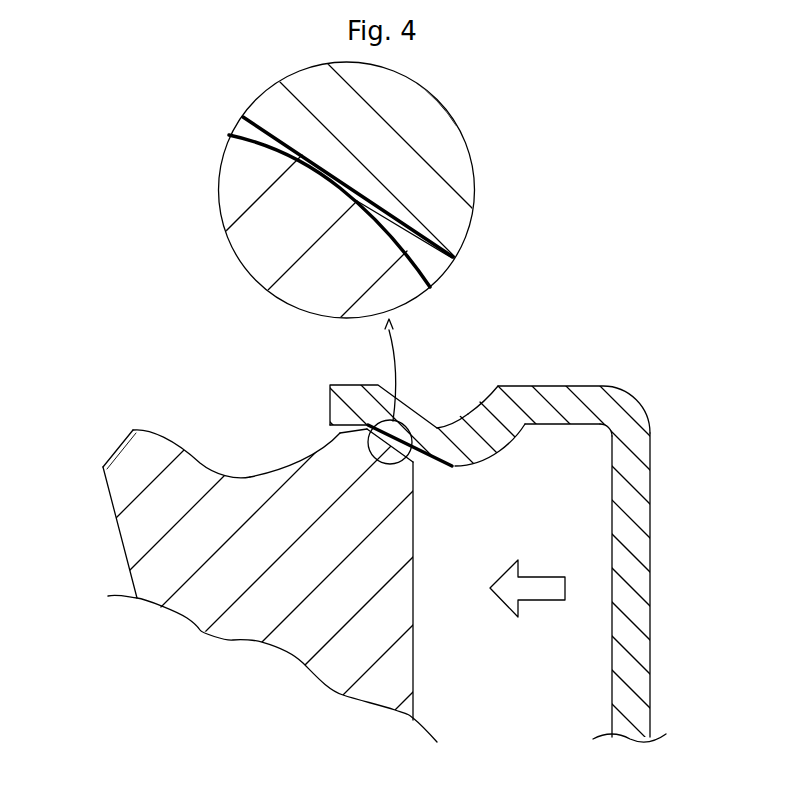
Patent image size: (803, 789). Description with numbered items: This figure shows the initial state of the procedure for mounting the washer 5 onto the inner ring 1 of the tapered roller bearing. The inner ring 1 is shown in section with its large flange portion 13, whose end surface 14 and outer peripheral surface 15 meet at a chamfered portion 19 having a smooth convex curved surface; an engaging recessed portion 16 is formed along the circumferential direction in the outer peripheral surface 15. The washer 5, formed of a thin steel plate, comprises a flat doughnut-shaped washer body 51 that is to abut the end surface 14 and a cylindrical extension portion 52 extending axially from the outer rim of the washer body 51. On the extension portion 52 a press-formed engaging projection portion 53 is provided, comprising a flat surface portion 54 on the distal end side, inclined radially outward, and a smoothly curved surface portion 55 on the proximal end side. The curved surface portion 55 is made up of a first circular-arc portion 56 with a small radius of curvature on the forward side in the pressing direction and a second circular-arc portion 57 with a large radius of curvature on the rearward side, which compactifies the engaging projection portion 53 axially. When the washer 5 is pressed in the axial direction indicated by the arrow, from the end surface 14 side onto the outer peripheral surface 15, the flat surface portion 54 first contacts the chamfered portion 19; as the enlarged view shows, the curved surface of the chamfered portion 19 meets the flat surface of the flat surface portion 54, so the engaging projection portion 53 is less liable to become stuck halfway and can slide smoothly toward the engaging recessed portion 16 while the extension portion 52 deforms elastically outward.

The inner ring 1 is at (257, 484).
The washer 5 is at (528, 523).
The large flange portion 13 is at (386, 620).
The end surface 14 is at (415, 667).
The outer peripheral surface 15 is at (139, 426).
The engaging recessed portion 16 is at (247, 473).
The chamfered portion 19 is at (410, 457).
The washer body 51 is at (641, 583).
The extension portion 52 is at (558, 383).
The engaging projection portion 53 is at (509, 469).
The flat surface portion 54 is at (452, 461).
The curved surface portion 55 is at (470, 370).
The first circular-arc portion 56 is at (433, 436).
The second circular-arc portion 57 is at (489, 430).